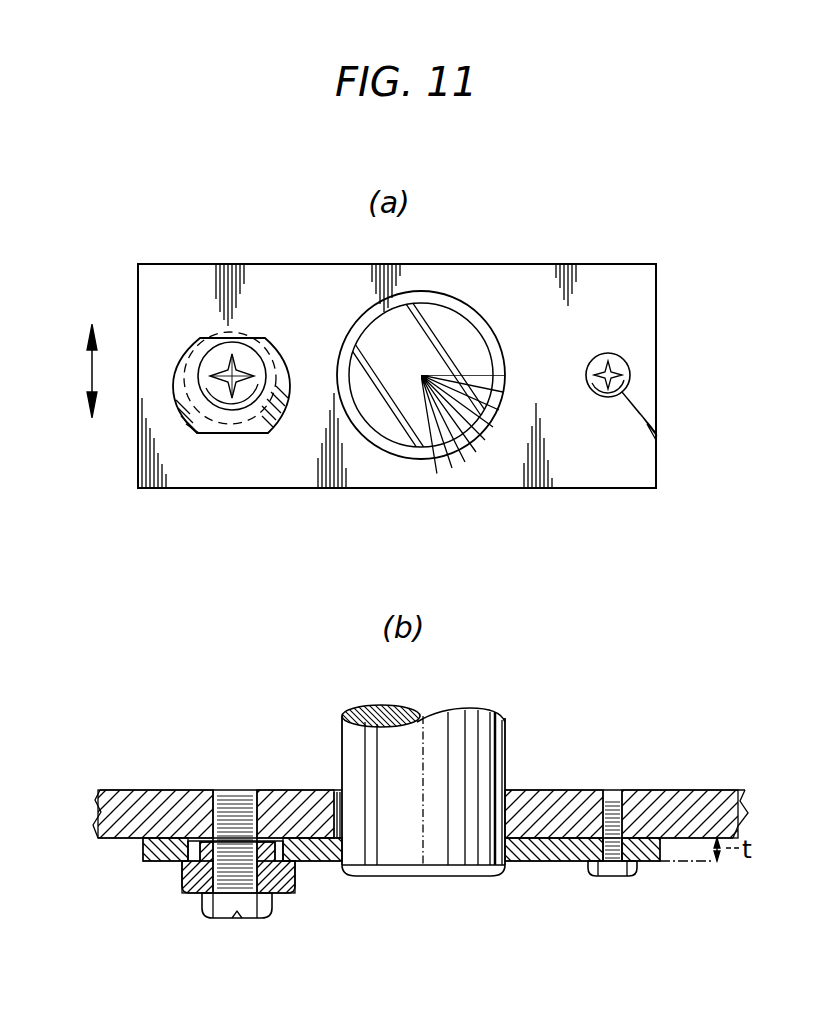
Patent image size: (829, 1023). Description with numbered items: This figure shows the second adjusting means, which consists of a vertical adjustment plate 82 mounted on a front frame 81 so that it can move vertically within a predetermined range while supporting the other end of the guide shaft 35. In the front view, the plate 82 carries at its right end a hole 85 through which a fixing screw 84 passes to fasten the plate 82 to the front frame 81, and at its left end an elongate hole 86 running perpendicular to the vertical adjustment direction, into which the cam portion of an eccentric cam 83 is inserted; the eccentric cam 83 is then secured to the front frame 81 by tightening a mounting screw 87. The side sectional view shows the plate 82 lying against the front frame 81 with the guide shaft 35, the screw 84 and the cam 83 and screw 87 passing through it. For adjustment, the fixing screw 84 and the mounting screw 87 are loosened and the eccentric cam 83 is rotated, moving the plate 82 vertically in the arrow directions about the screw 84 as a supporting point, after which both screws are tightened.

The guide shaft 35 is at (470, 334).
The front frame 81 is at (587, 797).
The vertical adjustment plate 82 is at (616, 474).
The eccentric cam 83 is at (270, 434).
The fixing screw 84 is at (613, 357).
The hole 85 is at (583, 861).
The elongate hole 86 is at (208, 423).
The mounting screw 87 is at (212, 355).